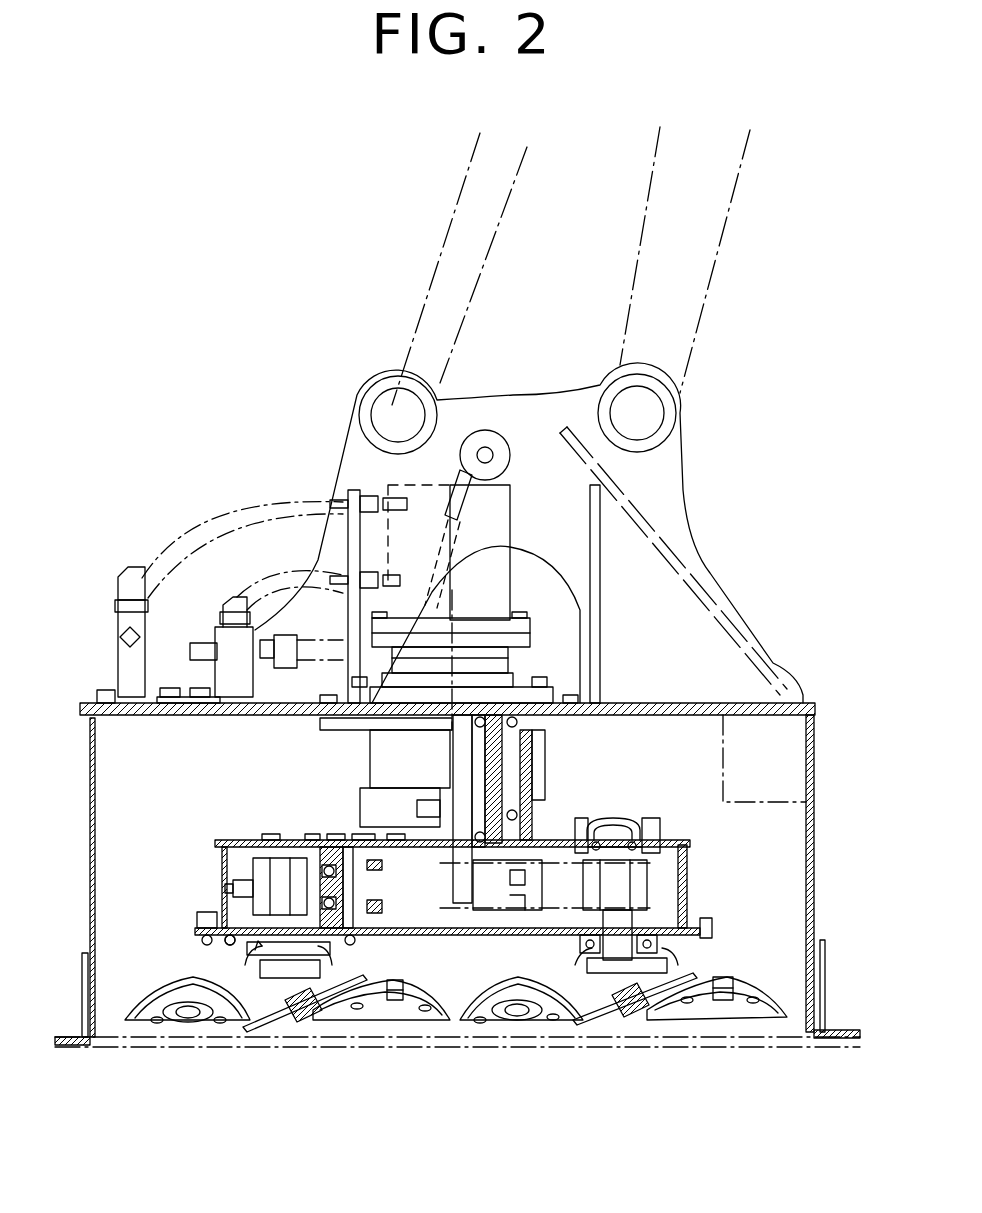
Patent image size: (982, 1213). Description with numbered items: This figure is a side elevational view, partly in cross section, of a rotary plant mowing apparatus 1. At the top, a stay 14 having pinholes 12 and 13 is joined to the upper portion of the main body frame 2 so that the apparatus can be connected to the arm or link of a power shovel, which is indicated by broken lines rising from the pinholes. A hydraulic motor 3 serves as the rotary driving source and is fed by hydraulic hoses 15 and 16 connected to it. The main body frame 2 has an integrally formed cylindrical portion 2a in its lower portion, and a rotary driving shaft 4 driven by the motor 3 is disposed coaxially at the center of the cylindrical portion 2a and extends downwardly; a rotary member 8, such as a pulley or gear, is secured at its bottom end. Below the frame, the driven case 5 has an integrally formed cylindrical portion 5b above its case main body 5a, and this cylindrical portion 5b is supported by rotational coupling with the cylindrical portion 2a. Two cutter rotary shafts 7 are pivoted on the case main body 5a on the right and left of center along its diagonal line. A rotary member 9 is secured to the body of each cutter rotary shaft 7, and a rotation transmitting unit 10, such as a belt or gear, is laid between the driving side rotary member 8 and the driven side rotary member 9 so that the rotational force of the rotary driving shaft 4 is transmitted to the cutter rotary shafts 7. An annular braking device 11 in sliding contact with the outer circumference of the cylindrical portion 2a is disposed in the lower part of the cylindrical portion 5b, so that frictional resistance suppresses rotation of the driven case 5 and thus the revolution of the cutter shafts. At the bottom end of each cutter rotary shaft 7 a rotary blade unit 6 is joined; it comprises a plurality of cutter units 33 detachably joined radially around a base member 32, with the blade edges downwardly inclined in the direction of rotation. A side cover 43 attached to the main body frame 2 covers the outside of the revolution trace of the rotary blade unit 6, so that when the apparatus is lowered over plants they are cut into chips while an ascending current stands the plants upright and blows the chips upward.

The plant mowing apparatus 1 is at (762, 424).
The main body frame 2 is at (640, 697).
The cylindrical portion 2a is at (388, 752).
The hydraulic motor 3 is at (490, 588).
The rotary driving shaft 4 is at (495, 762).
The driven case 5 is at (305, 818).
The case main body 5a is at (220, 873).
The cylindrical portion 5b is at (505, 778).
The rotary blade unit 6 is at (277, 1050).
The cutter rotary shaft 7 is at (613, 893).
The rotary member 8 is at (483, 943).
The rotary member 9 is at (647, 868).
The rotation transmitting unit 10 is at (557, 888).
The braking device 11 is at (367, 808).
The pinhole 12 is at (380, 402).
The pinhole 13 is at (628, 405).
The stay 14 is at (681, 549).
The hydraulic hose 15 is at (205, 535).
The hydraulic hose 16 is at (320, 640).
The base member 32 is at (580, 990).
The cutter unit 33 is at (145, 1020).
The side cover 43 is at (817, 835).